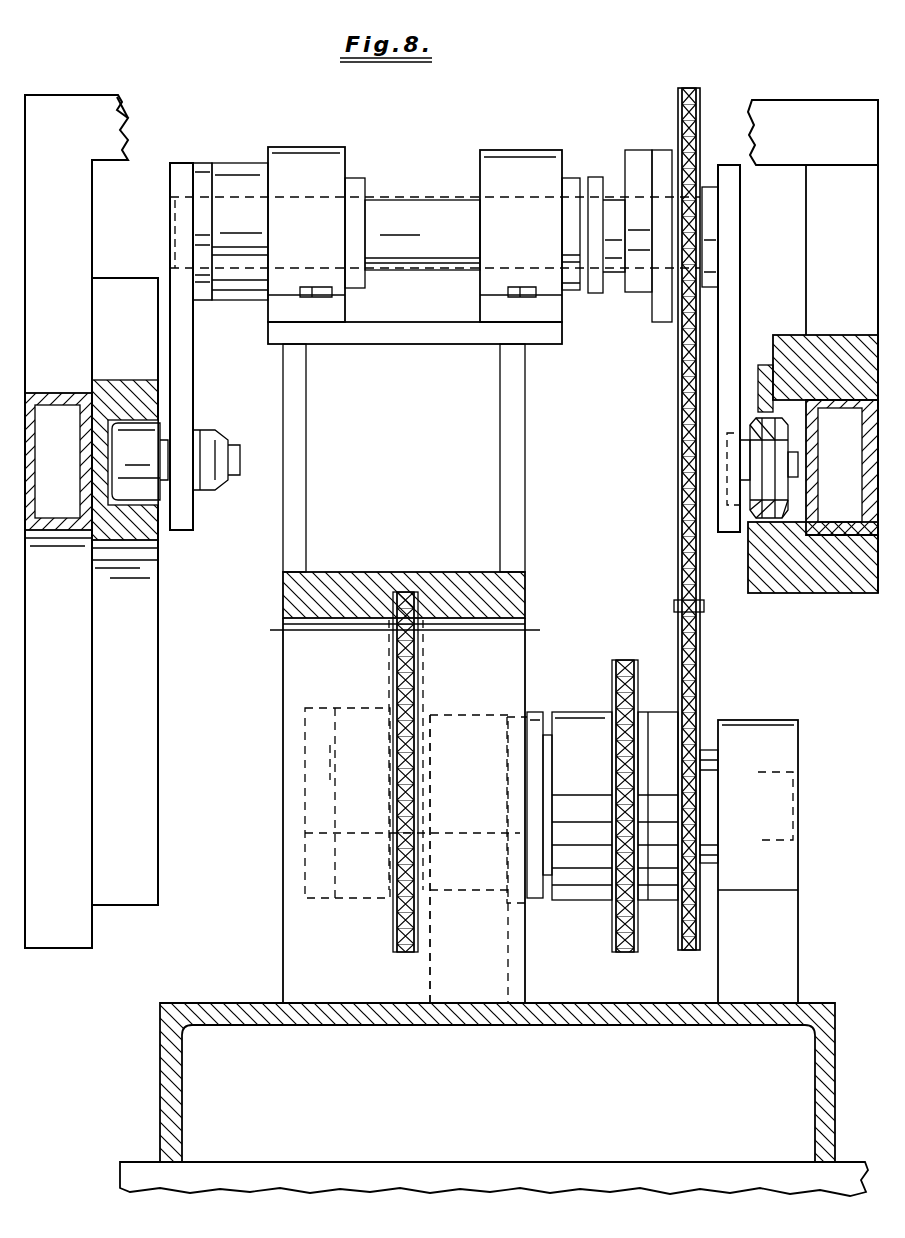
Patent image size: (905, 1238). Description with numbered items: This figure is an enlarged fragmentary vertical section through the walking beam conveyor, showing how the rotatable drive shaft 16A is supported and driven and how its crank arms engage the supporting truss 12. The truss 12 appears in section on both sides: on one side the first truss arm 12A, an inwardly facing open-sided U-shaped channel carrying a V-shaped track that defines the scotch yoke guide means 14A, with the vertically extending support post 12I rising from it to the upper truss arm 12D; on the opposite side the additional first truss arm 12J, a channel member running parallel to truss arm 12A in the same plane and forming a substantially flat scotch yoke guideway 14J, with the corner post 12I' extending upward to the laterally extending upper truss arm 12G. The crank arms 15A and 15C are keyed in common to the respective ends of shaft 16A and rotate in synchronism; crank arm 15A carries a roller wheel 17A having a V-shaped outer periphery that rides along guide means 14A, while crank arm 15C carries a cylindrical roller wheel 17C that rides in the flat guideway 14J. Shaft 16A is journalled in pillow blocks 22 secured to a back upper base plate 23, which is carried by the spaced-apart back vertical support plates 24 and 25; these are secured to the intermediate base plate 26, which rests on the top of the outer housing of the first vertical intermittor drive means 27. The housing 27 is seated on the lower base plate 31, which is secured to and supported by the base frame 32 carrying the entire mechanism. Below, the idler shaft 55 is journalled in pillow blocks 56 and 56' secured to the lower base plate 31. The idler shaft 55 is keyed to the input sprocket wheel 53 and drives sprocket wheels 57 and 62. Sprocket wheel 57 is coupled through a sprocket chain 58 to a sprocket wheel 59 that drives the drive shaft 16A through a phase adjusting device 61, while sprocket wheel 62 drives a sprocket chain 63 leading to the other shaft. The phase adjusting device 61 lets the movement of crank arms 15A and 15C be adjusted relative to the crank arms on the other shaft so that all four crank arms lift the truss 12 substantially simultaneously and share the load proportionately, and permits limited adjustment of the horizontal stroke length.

The T-shaped supporting truss 12 is at (108, 90).
The laterally extending truss arm 12G is at (120, 112).
The vertically extending support post 12I' is at (110, 554).
The additional first truss arm 12J is at (60, 395).
The scotch yoke guideway 14J is at (128, 420).
The cylindrical roller wheel 17C is at (145, 498).
The crank arm 15C is at (188, 346).
The pillow blocks 22 is at (306, 152).
The rotatable drive shaft 16A is at (420, 200).
The back upper base plate 23 is at (370, 335).
The back vertical support plate 24 is at (302, 433).
The back vertical support plate 25 is at (508, 436).
The intermediate base plate 26 is at (354, 578).
The first vertical intermittor drive means 27 is at (512, 634).
The phase adjusting device 61 is at (625, 150).
The sprocket wheel 59 is at (682, 118).
The sprocket chain 58 is at (688, 482).
The sprocket wheel 57 is at (702, 690).
The crank arm 15A is at (738, 292).
The truss arm 12D is at (815, 112).
The vertically extending support post 12I is at (785, 250).
The first truss arm 12A is at (838, 385).
The scotch yoke guide means 14A is at (790, 348).
The roller wheel 17A is at (742, 522).
The sprocket chain 63 is at (393, 662).
The sprocket wheel 62 is at (392, 706).
The idler shaft 55 is at (310, 808).
The sprocket wheel 53 is at (616, 692).
The pillow blocks 56 is at (778, 836).
The drum 56' is at (391, 859).
The lower base plate 31 is at (828, 1050).
The base frame 32 is at (245, 1182).